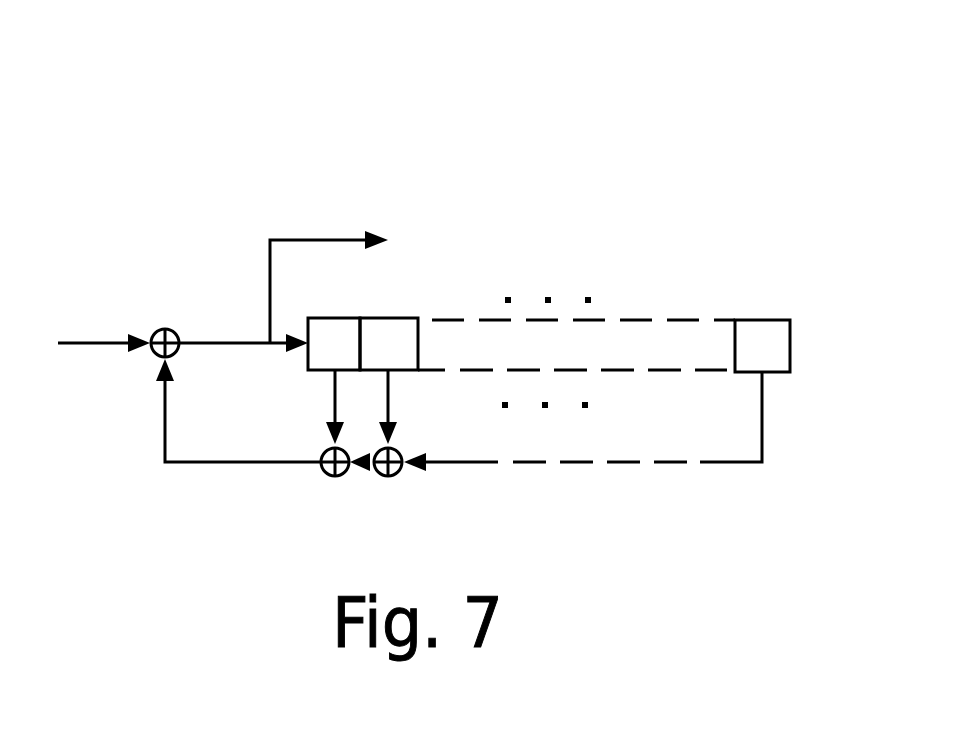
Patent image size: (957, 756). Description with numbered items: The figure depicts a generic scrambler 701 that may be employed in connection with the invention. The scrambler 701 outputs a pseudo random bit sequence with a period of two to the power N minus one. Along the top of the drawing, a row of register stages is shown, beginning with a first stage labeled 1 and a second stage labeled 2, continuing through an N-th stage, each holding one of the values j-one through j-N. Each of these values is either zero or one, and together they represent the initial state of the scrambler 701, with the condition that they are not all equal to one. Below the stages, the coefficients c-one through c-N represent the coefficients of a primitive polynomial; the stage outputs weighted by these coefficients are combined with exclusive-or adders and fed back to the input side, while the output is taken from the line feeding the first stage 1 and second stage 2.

The scrambler 701 is at (431, 246).
The first shift register stage 1 is at (334, 323).
The second shift register stage 2 is at (389, 323).